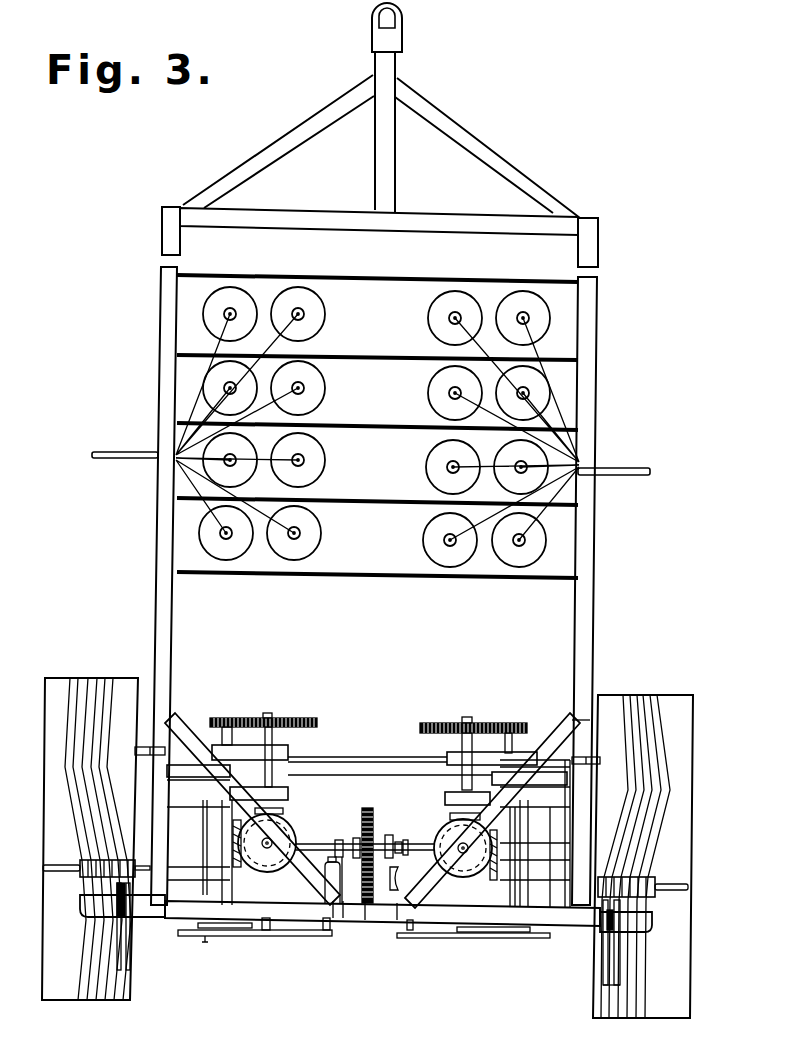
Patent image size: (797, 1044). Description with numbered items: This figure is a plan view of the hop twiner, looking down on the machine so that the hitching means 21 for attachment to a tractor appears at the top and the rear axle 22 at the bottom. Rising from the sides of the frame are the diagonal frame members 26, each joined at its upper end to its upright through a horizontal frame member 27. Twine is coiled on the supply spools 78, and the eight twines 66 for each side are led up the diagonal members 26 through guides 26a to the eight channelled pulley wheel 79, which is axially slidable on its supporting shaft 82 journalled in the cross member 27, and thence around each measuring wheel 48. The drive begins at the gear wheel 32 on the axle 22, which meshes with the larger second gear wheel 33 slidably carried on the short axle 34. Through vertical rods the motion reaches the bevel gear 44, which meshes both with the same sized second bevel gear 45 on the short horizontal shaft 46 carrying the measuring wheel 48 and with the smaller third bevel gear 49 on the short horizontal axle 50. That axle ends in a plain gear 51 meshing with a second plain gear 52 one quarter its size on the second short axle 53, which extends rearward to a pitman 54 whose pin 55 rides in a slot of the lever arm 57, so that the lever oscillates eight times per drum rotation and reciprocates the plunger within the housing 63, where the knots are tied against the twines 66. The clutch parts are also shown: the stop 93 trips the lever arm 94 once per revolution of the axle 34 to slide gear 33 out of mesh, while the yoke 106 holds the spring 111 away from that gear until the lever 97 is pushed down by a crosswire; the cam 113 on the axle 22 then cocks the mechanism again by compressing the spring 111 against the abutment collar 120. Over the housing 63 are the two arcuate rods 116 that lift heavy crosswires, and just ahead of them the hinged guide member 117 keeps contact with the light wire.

The hitching means 21 is at (397, 58).
The axle 22 is at (178, 880).
The diagonal frame member 26 is at (594, 593).
The guide 26a is at (625, 471).
The horizontal frame member 27 is at (578, 738).
The gear wheel 32 is at (364, 905).
The second gear wheel 33 is at (368, 808).
The short axle 34 is at (316, 843).
The bevel gear 44 is at (293, 836).
The second bevel gear 45 is at (242, 868).
The short horizontal shaft 46 is at (543, 858).
The measuring wheel 48 is at (45, 722).
The third bevel gear 49 is at (283, 828).
The short horizontal axle 50 is at (300, 740).
The plain gear 51 is at (300, 718).
The second plain gear 52 is at (238, 718).
The second short axle 53 is at (222, 735).
The pitman 54 is at (242, 928).
The pin 55 is at (205, 938).
The lever arm 57 is at (283, 936).
The housing 63 is at (317, 916).
The twines 66 is at (200, 374).
The supply spools 78 is at (322, 389).
The pulley wheel 79 is at (78, 877).
The supporting shaft 82 is at (43, 868).
The stop 93 is at (341, 905).
The lever arm 94 is at (339, 840).
The lever 97 is at (612, 986).
The yoke 106 is at (388, 835).
The spring 111 is at (400, 842).
The cam 113 is at (392, 891).
The arcuate rods 116 is at (128, 970).
The hinged guide member 117 is at (160, 740).
The abutment collar 120 is at (442, 843).